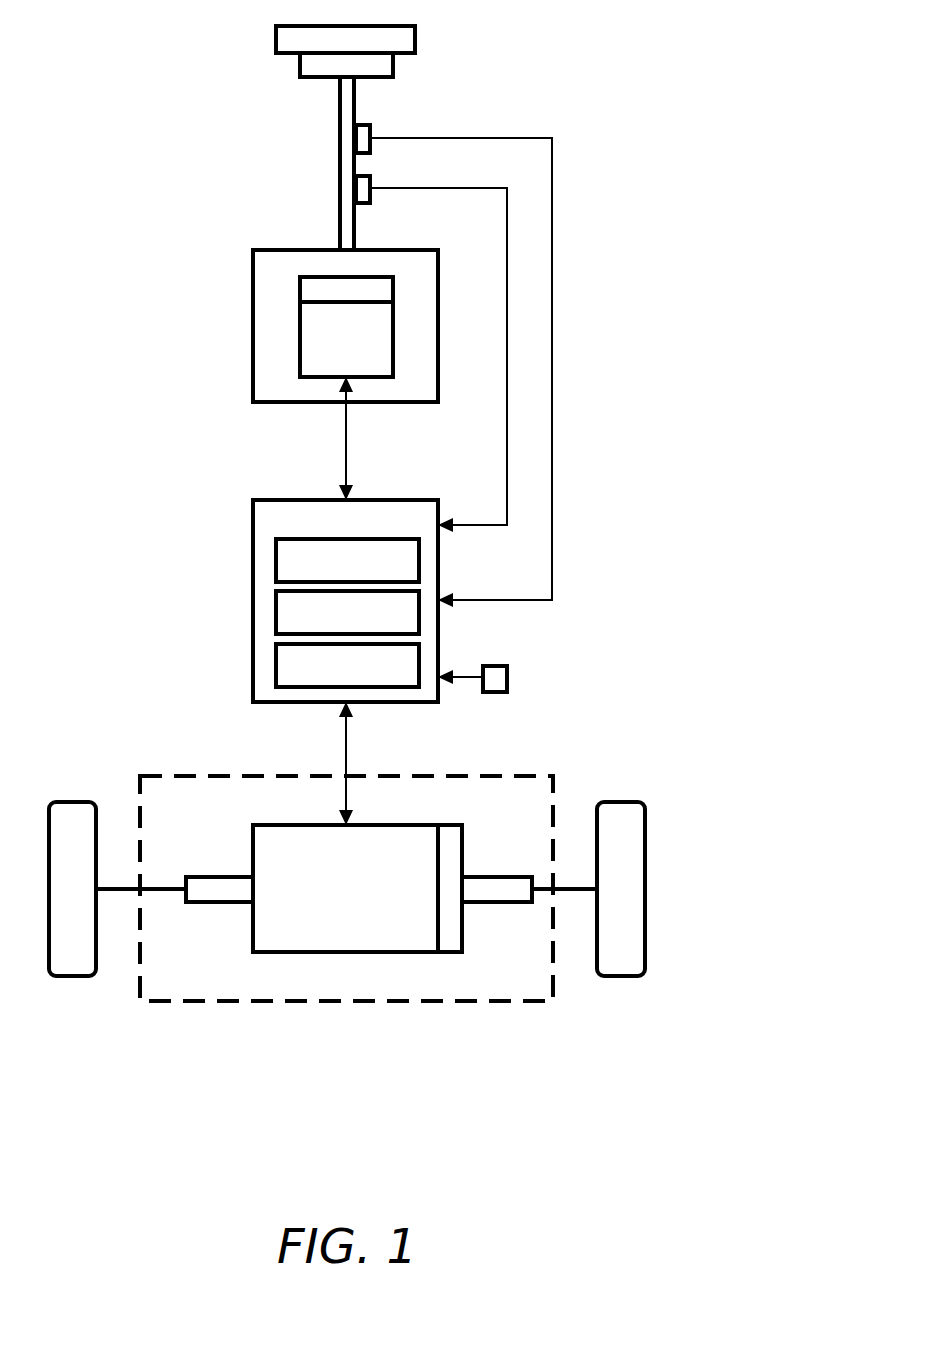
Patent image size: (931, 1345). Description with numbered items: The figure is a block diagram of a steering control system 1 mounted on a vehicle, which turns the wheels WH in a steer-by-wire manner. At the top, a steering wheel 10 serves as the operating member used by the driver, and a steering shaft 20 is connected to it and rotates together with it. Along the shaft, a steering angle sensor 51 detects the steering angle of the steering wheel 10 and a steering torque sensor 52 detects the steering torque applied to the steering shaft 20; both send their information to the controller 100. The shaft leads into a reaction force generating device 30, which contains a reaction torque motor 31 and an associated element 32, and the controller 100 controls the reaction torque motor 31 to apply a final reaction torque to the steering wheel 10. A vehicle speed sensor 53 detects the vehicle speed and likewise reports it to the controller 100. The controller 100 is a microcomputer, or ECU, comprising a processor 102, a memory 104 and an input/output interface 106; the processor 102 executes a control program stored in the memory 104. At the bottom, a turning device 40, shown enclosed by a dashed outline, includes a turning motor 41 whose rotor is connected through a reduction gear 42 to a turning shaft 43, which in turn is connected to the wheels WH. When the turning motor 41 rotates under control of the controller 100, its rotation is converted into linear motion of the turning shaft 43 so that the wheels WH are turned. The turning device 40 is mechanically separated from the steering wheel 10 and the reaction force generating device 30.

The steering control system 1 is at (557, 103).
The steering wheel 10 is at (276, 40).
The steering shaft 20 is at (340, 98).
The reaction force generating device 30 is at (293, 250).
The reaction torque motor 31 is at (300, 327).
The reduction gear 32 is at (416, 286).
The turning device 40 is at (347, 1001).
The turning motor 41 is at (300, 952).
The reduction gear 42 is at (453, 952).
The turning shaft 43 is at (231, 902).
The steering angle sensor 51 is at (356, 140).
The steering torque sensor 52 is at (356, 190).
The vehicle speed sensor 53 is at (507, 678).
The controller 100 is at (289, 500).
The processor 102 is at (276, 563).
The memory 104 is at (276, 617).
The input/output interface 106 is at (276, 671).
The wheels WH is at (75, 976).